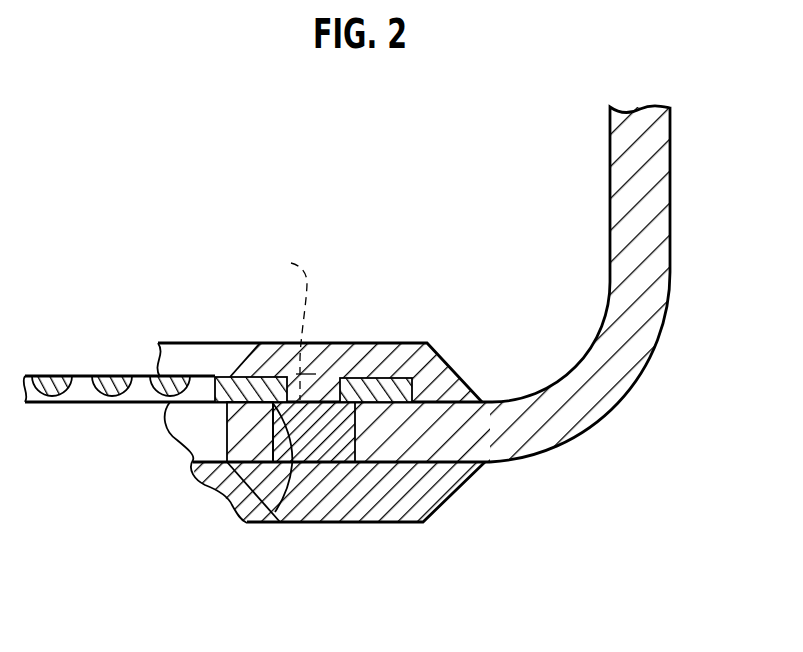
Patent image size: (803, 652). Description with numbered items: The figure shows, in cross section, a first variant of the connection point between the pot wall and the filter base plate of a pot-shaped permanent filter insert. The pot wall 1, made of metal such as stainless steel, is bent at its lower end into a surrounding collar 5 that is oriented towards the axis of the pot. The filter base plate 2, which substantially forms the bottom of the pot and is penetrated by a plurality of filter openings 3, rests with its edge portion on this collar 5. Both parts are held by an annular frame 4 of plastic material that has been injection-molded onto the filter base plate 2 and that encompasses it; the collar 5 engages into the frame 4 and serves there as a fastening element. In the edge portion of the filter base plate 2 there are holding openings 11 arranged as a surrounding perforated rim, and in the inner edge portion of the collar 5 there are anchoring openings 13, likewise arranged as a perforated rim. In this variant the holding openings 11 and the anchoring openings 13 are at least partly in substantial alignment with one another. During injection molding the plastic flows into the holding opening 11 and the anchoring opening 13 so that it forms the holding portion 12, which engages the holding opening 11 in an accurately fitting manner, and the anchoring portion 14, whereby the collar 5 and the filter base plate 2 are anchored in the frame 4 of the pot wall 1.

The pot wall 1 is at (658, 282).
The filter base plate 2 is at (53, 400).
The filter openings 3 is at (143, 393).
The annular frame 4 is at (396, 345).
The collar 5 is at (443, 435).
The holding openings 11 is at (340, 386).
The holding portions 12 is at (286, 325).
The anchoring openings 13 is at (259, 499).
The anchoring portions 14 is at (342, 459).